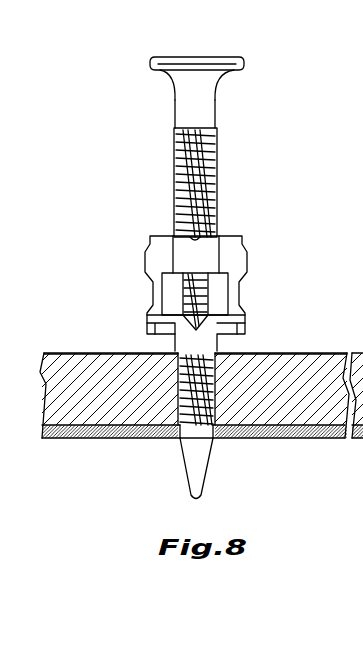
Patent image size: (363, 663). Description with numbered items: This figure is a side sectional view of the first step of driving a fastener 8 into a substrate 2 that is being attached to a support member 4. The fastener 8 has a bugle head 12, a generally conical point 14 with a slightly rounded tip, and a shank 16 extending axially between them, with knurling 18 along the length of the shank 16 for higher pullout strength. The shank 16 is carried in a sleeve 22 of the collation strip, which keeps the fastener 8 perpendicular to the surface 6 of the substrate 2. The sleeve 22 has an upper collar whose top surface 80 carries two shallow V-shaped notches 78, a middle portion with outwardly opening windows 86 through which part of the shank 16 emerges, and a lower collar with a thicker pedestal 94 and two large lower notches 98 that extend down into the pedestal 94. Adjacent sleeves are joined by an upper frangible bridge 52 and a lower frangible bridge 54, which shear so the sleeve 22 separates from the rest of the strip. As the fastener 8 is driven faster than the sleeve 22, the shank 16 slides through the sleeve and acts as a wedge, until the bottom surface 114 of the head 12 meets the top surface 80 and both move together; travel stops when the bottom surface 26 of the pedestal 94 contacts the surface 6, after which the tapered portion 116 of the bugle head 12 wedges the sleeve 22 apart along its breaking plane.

The substrate 2 is at (295, 366).
The support member 4 is at (80, 440).
The surface of substrate 6 is at (78, 356).
The fastener 8 is at (250, 145).
The head 12 is at (215, 57).
The point 14 is at (198, 477).
The shank 16 is at (173, 152).
The knurling 18 is at (173, 178).
The sleeve 22 is at (268, 232).
The bottom surface of pedestal 26 is at (162, 357).
The upper frangible bridge 52 is at (243, 257).
The lower frangible bridge 54 is at (248, 322).
The notches 78 is at (178, 215).
The top surface of upper collar 80 is at (228, 233).
The windows 86 is at (183, 300).
The pedestal 94 is at (250, 339).
The lower notches 98 is at (155, 332).
The bottom surface of fastener head 114 is at (235, 72).
The tapered portion of bugle head 116 is at (185, 90).